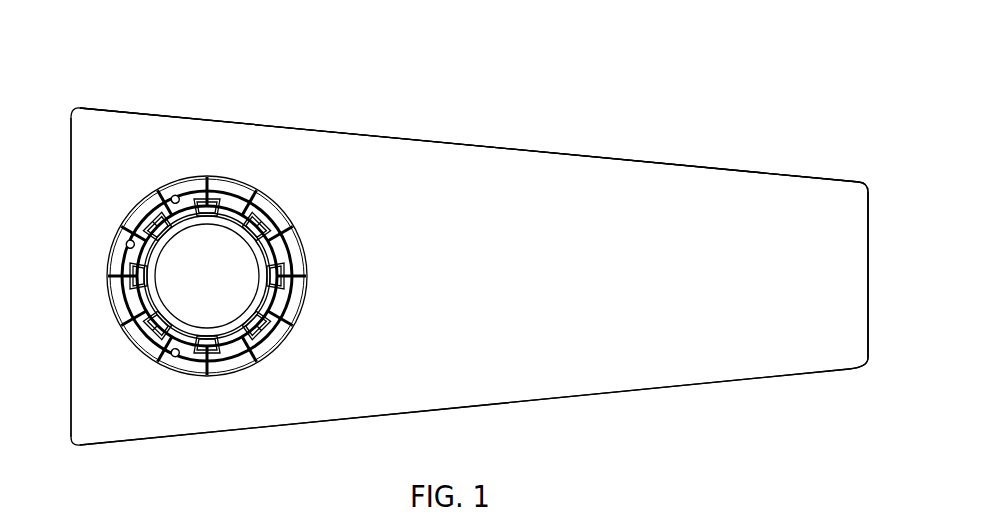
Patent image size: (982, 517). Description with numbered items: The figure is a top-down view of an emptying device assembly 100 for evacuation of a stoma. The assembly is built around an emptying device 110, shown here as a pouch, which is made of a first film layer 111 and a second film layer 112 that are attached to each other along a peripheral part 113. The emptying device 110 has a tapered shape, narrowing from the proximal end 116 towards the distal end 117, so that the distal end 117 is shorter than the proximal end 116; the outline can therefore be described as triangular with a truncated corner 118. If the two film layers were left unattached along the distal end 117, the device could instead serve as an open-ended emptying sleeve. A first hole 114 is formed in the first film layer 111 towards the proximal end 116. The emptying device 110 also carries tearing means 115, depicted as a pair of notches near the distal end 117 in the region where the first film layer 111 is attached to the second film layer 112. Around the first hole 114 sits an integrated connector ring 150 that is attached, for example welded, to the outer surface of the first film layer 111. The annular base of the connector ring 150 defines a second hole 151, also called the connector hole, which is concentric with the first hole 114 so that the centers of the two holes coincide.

The emptying device assembly 100 is at (160, 99).
The emptying device 110 is at (617, 217).
The first film layer 111 is at (462, 178).
The second film layer 112 is at (510, 185).
The peripheral part 113 is at (522, 402).
The first hole 114 is at (205, 293).
The tearing means 115 is at (838, 183).
The proximal end 116 is at (75, 280).
The distal end 117 is at (863, 288).
The truncated corner 118 is at (897, 298).
The connector ring 150 is at (226, 185).
The second hole 151 is at (232, 287).